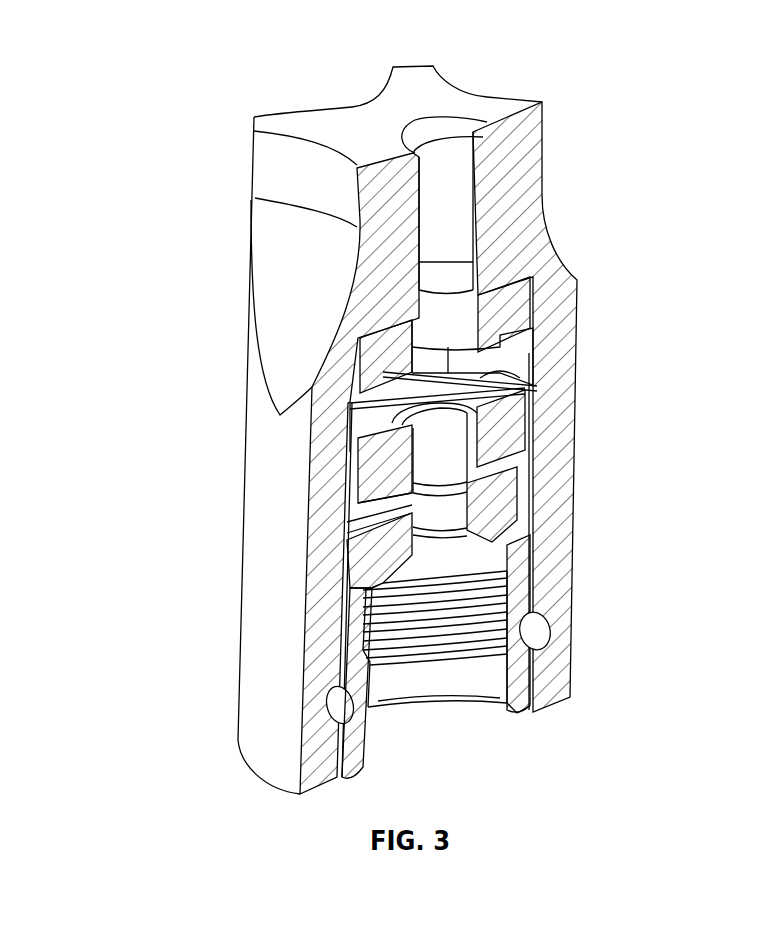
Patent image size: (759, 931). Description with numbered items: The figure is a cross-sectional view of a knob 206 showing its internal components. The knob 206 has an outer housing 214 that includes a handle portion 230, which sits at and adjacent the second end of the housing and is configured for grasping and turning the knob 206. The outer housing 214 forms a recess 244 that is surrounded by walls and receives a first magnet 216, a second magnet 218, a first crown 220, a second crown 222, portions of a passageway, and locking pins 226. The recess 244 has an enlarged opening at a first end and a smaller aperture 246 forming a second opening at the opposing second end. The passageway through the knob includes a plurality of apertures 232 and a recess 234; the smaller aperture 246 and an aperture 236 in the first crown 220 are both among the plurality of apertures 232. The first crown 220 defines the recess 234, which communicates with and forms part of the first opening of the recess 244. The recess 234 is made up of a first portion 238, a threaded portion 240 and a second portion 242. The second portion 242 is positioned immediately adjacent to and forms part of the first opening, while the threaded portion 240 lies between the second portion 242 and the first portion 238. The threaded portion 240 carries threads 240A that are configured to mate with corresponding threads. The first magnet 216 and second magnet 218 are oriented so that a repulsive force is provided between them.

The knob 206 is at (600, 66).
The outer housing 214 is at (254, 418).
The first magnet 216 is at (380, 362).
The second magnet 218 is at (510, 428).
The first crown 220 is at (457, 515).
The second crown 222 is at (520, 470).
The locking pins 226 is at (525, 444).
The handle portion 230 is at (544, 153).
The plurality of apertures 232 is at (573, 213).
The recess 234 is at (489, 725).
The aperture 236 is at (455, 560).
The first portion 238 is at (480, 612).
The threaded portion 240 is at (528, 683).
The threads 240A is at (537, 640).
The second portion 242 is at (487, 683).
The recess 244 is at (445, 695).
The smaller aperture 246 is at (448, 195).